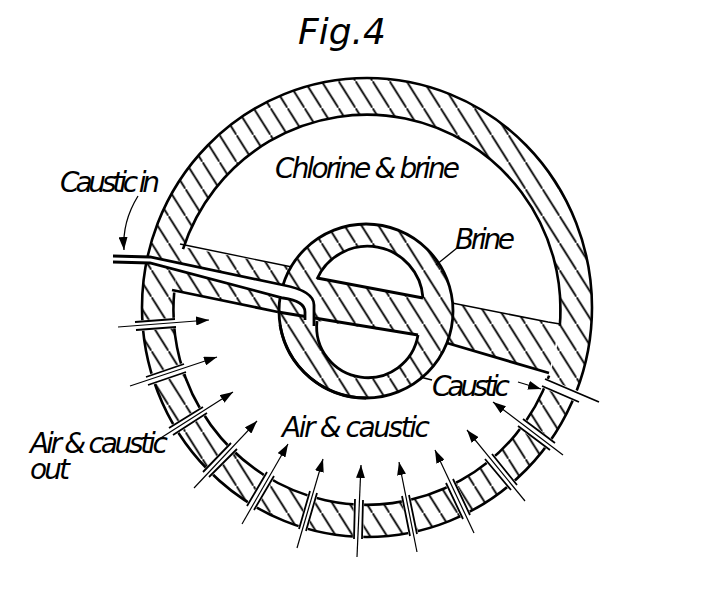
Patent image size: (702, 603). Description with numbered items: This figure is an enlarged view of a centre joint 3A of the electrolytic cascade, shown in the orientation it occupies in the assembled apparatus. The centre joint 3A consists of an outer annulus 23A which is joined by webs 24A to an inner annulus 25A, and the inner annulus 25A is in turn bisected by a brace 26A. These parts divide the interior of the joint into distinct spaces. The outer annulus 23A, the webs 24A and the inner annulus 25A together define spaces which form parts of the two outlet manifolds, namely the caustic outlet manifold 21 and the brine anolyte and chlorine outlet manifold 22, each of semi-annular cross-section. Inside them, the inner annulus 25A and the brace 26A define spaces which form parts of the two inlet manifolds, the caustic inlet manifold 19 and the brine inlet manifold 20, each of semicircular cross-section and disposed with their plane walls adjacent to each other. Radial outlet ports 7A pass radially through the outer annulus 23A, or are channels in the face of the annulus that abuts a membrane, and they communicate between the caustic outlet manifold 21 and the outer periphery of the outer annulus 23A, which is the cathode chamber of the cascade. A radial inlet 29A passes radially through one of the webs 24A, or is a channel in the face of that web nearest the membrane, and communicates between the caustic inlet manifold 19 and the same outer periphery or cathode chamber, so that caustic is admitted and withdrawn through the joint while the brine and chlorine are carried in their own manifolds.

The centre joint 3A is at (531, 136).
The outer annulus 23A is at (423, 98).
The brine anolyte and chlorine outlet manifold 22 is at (512, 190).
The webs 24A is at (236, 257).
The radial inlet 29A is at (193, 282).
The brine inlet manifold 20 is at (386, 281).
The brace 26A is at (440, 306).
The caustic inlet manifold 19 is at (370, 363).
The inner annulus 25A is at (298, 365).
The radial outlet ports 7A is at (577, 385).
The caustic outlet manifold 21 is at (297, 484).